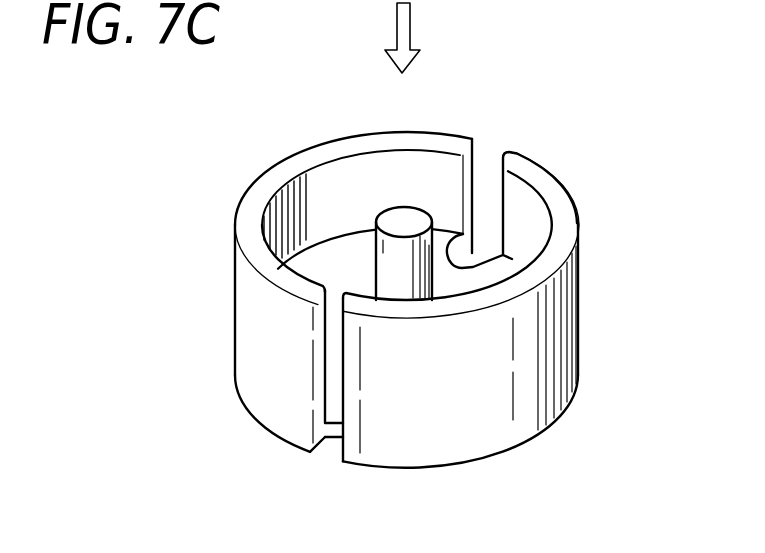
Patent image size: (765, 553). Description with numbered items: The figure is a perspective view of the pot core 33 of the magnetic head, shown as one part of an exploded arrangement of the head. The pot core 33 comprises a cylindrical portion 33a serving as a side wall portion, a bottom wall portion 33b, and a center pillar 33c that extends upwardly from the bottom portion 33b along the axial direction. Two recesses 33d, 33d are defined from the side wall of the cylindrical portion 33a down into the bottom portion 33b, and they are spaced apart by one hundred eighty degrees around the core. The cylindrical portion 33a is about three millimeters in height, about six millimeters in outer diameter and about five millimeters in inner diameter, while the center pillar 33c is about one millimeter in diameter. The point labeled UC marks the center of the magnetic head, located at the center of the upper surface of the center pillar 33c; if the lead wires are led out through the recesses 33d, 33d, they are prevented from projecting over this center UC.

The pot core 33 is at (476, 100).
The cylindrical portion 33a is at (545, 315).
The bottom wall portion 33b is at (338, 406).
The center pillar 33c is at (363, 235).
The recess 33d is at (468, 250).
The center of the magnetic head UC is at (402, 217).